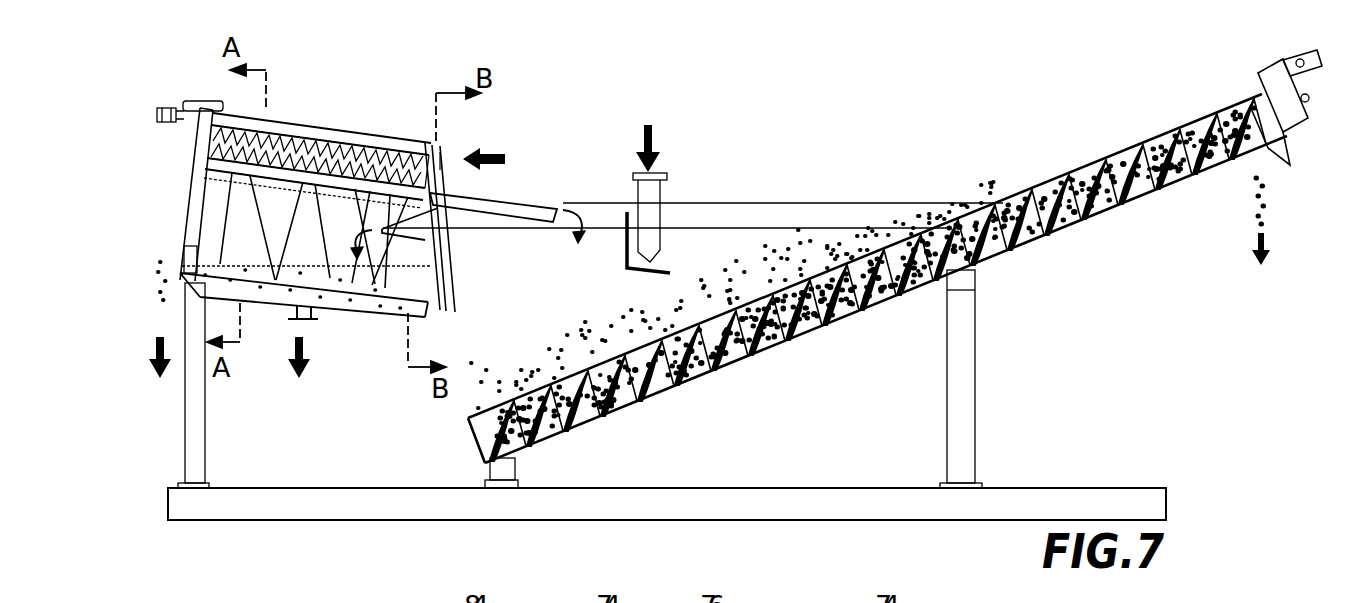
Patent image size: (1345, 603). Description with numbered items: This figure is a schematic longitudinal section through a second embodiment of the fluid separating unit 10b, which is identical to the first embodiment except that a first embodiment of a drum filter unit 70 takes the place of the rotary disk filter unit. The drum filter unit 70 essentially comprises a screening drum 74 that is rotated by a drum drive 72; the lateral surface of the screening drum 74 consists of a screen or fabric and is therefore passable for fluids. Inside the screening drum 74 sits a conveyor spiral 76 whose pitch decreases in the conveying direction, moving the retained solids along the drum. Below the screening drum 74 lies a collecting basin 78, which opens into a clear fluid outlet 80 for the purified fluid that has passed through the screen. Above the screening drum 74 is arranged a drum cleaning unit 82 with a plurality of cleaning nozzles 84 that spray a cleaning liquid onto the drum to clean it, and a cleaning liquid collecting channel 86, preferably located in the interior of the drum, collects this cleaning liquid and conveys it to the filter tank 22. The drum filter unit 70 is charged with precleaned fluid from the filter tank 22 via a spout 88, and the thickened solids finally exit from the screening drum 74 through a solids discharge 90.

The fluid separating unit 10b is at (714, 181).
The filter tank 22 is at (592, 303).
The drum filter unit 70 is at (327, 119).
The drum drive 72 is at (171, 108).
The screening drum 74 is at (358, 304).
The conveyor spiral 76 is at (227, 215).
The collecting basin 78 is at (270, 300).
The clear fluid outlet 80 is at (304, 320).
The drum cleaning unit 82 is at (397, 139).
The cleaning nozzles 84 is at (263, 136).
The cleaning liquid collecting channel 86 is at (227, 158).
The spout 88 is at (428, 237).
The solids discharge 90 is at (160, 256).